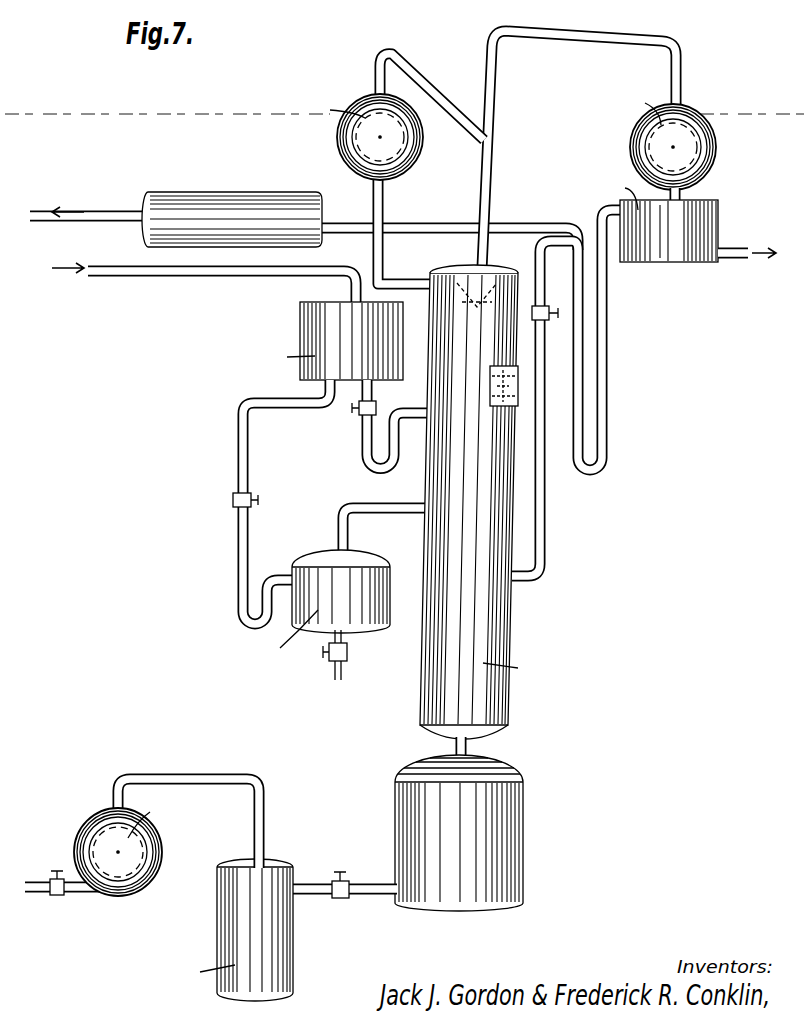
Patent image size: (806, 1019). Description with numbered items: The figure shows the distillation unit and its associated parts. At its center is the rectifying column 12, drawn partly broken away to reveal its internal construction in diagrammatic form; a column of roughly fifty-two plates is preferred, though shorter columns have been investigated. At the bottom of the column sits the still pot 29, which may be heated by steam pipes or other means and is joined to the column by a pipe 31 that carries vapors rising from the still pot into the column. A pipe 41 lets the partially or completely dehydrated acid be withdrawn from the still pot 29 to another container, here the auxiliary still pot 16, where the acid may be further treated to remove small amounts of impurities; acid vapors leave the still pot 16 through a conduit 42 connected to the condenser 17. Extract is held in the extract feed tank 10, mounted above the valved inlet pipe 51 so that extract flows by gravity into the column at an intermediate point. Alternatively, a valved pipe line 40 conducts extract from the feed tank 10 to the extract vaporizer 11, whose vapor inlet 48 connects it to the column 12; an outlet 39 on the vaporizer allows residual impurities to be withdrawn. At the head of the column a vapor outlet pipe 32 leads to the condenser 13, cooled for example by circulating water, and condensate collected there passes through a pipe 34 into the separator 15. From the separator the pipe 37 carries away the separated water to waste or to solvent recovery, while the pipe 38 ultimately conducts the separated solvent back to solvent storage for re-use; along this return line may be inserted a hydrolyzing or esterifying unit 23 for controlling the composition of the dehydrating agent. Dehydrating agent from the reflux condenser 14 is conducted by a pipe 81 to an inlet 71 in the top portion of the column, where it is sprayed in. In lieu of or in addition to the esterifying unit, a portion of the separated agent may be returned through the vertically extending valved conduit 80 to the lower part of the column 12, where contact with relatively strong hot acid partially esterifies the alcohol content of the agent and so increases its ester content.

The extract feed tank 10 is at (300, 312).
The extract vaporizer 11 is at (368, 578).
The rectifying column 12 is at (503, 615).
The condenser 13 is at (650, 141).
The reflux condenser 14 is at (414, 160).
The separator 15 is at (662, 252).
The still pot 16 is at (232, 893).
The condenser 17 is at (100, 835).
The hydrolyzing or esterifying unit 23 is at (230, 206).
The still pot 29 is at (507, 837).
The pipe 31 is at (467, 748).
The vapor outlet pipe 32 is at (486, 165).
The pipe 34 is at (680, 198).
The pipe 37 is at (726, 249).
The pipe 38 is at (607, 362).
The outlet 39 is at (343, 670).
The valved pipe line 40 is at (240, 431).
The pipe 41 is at (360, 884).
The conduit 42 is at (215, 766).
The vapor inlet 48 is at (345, 508).
The valved inlet pipe 51 is at (368, 432).
The inlet 71 is at (504, 271).
The vertically extending valved conduit 80 is at (541, 492).
The pipe 81 is at (384, 197).